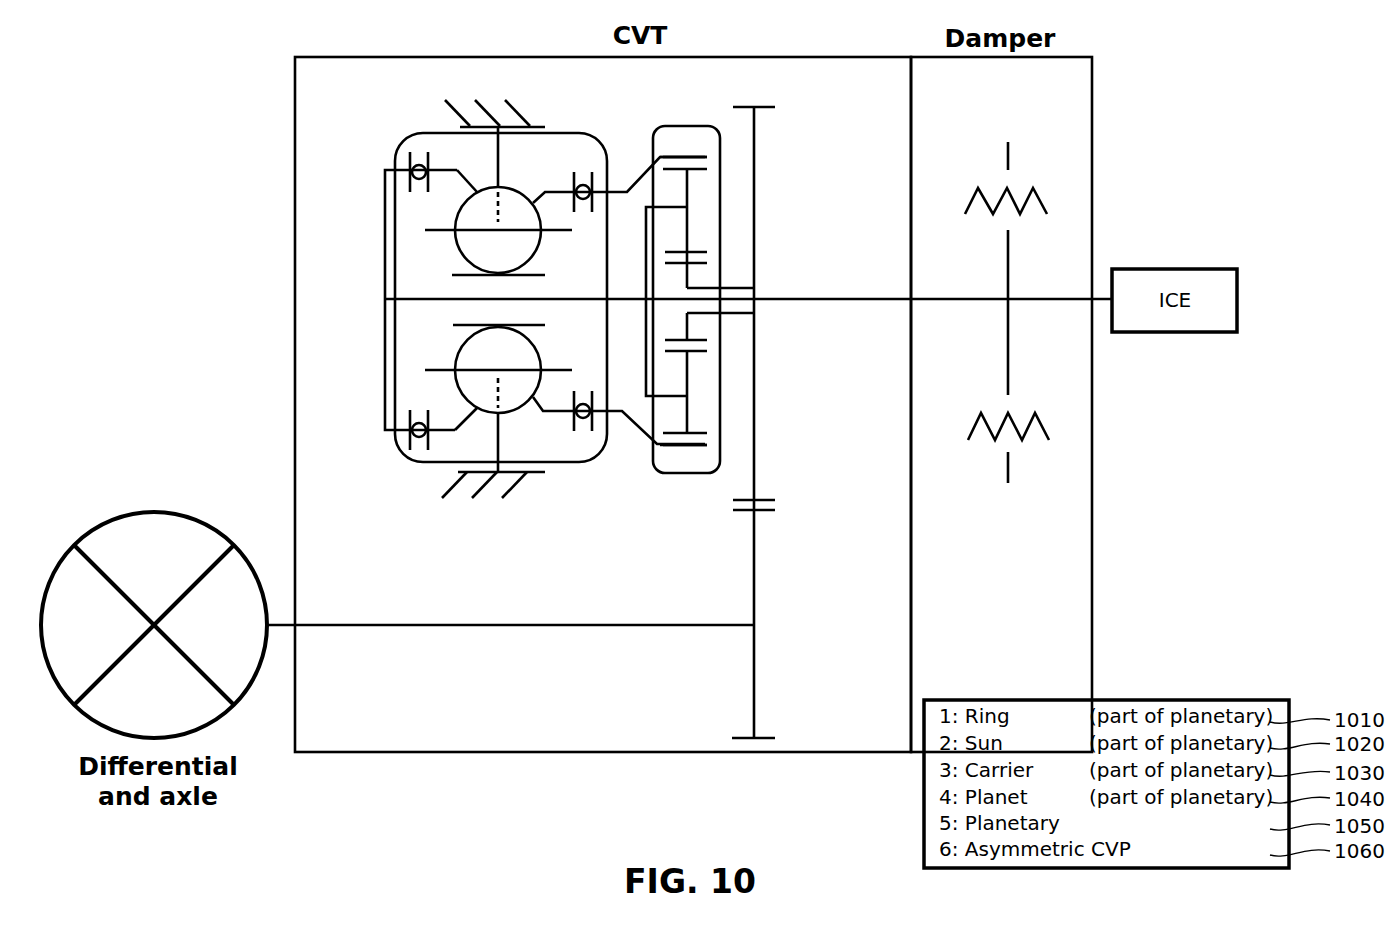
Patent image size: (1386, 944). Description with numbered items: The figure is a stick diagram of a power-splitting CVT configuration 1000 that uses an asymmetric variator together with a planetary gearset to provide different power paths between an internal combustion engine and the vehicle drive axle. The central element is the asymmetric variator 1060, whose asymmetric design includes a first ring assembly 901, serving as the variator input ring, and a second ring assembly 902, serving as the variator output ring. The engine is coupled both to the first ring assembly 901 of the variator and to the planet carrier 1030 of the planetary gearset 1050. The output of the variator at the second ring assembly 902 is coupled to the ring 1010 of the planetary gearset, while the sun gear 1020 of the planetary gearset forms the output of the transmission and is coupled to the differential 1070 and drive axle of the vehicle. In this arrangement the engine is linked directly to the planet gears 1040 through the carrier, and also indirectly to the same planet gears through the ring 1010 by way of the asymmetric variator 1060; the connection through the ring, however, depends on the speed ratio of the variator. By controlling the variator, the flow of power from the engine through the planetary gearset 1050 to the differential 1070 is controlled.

The power-splitting CVT configuration 1000 is at (220, 148).
The ring 1010 is at (703, 453).
The sun gear 1020 is at (688, 332).
The planet carrier 1030 is at (650, 235).
The planet gears 1040 is at (689, 186).
The planetary gearset 1050 is at (690, 126).
The asymmetric variator 1060 is at (398, 131).
The differential 1070 is at (753, 678).
The first ring assembly 901 is at (421, 443).
The second ring assembly 902 is at (599, 437).